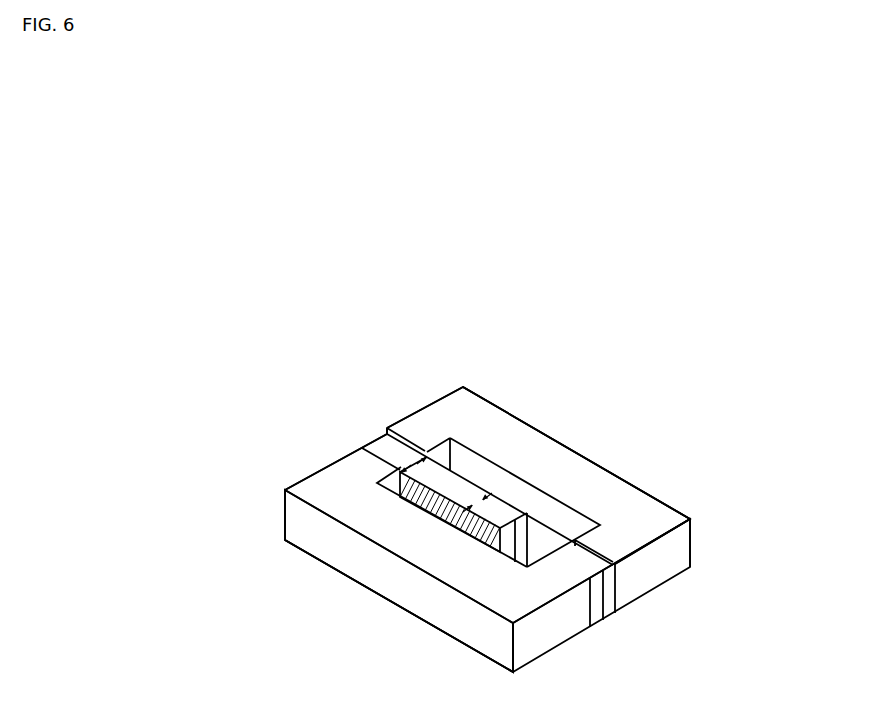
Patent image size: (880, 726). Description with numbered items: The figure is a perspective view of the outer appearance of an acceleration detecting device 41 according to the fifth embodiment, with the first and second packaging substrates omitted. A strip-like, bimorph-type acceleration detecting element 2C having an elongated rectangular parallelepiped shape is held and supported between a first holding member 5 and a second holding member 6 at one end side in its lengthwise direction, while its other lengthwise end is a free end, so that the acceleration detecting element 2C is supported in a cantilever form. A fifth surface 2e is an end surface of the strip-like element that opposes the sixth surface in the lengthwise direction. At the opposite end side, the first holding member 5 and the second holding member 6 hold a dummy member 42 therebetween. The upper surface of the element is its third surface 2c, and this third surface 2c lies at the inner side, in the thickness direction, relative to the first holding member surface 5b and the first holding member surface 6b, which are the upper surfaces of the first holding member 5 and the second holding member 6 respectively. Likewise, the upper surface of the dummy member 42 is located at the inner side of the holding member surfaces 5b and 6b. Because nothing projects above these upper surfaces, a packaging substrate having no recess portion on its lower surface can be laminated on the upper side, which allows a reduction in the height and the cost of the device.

The acceleration detecting device 41 is at (317, 402).
The third surface 2c is at (401, 446).
The acceleration detecting element 2C is at (483, 473).
The fifth surface 2e is at (371, 447).
The first holding member 5 is at (608, 464).
The first holding member surface 5b is at (645, 515).
The second holding member 6 is at (372, 602).
The first holding member surface 6b is at (496, 597).
The dummy member 42 is at (604, 624).